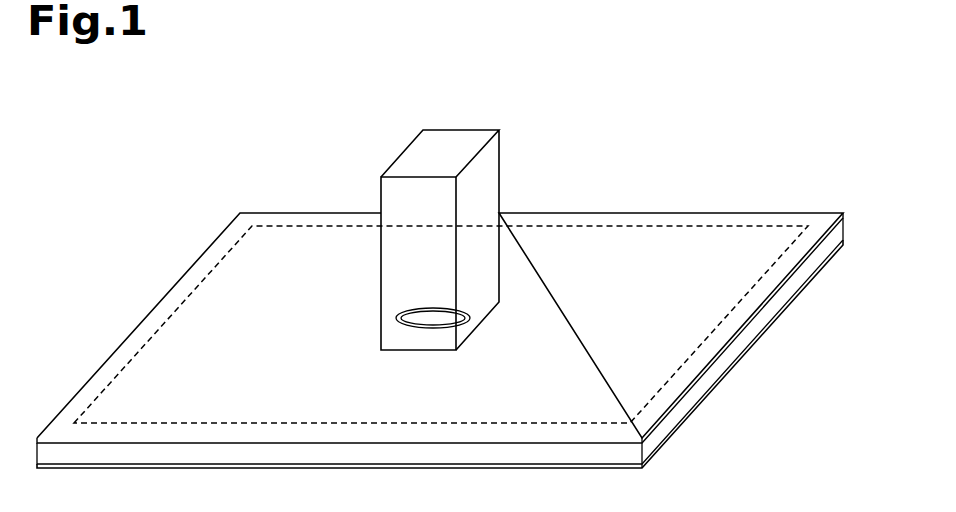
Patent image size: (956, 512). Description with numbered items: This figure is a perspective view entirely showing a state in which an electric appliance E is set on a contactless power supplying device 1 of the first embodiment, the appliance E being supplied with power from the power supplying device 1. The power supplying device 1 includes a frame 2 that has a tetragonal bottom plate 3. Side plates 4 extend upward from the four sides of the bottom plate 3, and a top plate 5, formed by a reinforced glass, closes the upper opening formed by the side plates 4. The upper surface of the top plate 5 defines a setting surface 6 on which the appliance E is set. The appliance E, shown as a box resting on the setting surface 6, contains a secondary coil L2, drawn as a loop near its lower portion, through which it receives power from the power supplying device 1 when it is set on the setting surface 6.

The contactless power supplying device 1 is at (442, 315).
The frame 2 is at (819, 213).
The bottom plate 3 is at (757, 341).
The side plates 4 is at (688, 401).
The top plate 5 is at (710, 369).
The setting surface 6 is at (791, 218).
The electric appliance E is at (443, 137).
The secondary coil L2 is at (430, 310).